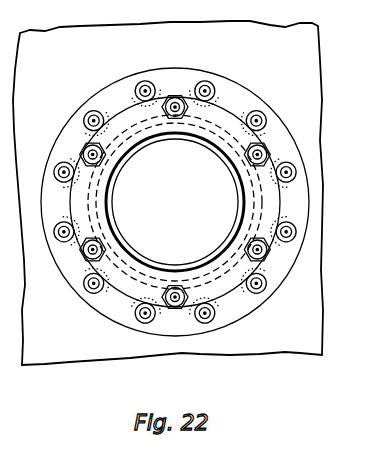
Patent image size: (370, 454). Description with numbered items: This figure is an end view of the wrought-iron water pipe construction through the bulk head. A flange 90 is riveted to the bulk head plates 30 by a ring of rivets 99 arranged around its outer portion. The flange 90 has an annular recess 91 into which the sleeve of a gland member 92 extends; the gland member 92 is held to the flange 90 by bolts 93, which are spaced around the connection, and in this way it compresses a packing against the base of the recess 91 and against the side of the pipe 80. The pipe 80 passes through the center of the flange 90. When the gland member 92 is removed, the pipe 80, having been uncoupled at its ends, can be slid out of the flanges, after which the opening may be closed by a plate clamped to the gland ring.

The bulk head plates 30 is at (168, 193).
The flange 90 is at (283, 124).
The annular recess 91 is at (234, 143).
The gland member 92 is at (97, 203).
The pipe 80 is at (141, 147).
The bolts 93 is at (83, 147).
The rivets 99 is at (147, 82).